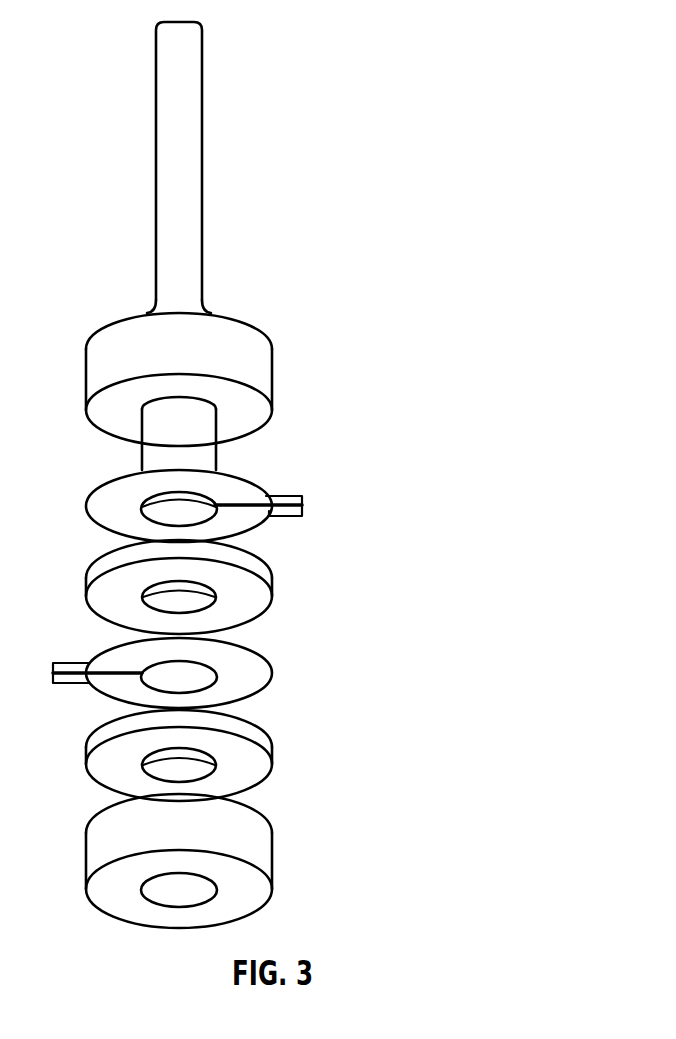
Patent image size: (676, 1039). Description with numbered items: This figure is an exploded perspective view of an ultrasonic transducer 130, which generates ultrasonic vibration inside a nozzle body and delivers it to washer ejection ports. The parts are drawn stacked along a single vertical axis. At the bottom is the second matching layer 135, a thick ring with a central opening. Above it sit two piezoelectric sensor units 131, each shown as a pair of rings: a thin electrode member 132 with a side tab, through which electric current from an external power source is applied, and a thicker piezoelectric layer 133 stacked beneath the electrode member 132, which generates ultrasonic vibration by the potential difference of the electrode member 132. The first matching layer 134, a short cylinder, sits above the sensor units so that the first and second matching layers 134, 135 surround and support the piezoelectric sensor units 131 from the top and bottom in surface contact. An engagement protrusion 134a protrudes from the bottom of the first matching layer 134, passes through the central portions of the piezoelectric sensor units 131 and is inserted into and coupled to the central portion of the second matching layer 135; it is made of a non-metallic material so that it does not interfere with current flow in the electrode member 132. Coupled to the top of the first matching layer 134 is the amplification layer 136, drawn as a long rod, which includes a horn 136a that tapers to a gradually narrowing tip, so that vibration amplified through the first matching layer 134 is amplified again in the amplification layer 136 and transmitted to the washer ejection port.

The ultrasonic transducer 130 is at (82, 227).
The piezoelectric sensor unit 131 is at (291, 635).
The electrode member 132 is at (302, 505).
The piezoelectric layer 133 is at (252, 597).
The first matching layer 134 is at (240, 343).
The engagement protrusion 134a is at (202, 435).
The second matching layer 135 is at (253, 838).
The amplification layer 136 is at (297, 167).
The horn 136a is at (180, 167).